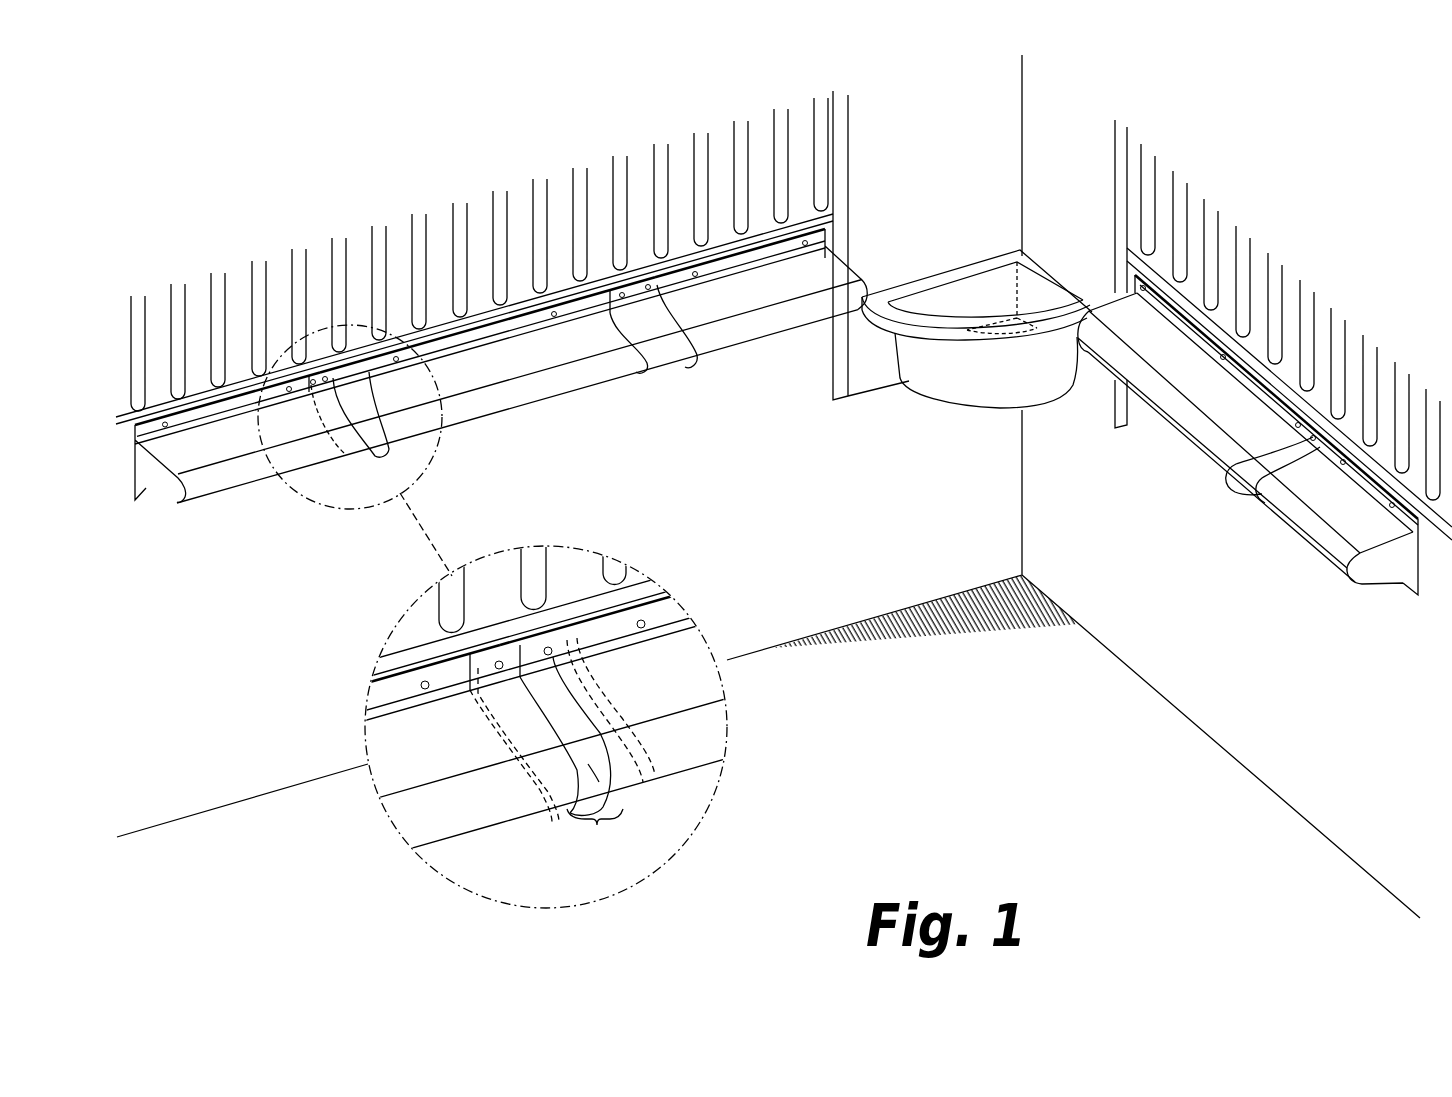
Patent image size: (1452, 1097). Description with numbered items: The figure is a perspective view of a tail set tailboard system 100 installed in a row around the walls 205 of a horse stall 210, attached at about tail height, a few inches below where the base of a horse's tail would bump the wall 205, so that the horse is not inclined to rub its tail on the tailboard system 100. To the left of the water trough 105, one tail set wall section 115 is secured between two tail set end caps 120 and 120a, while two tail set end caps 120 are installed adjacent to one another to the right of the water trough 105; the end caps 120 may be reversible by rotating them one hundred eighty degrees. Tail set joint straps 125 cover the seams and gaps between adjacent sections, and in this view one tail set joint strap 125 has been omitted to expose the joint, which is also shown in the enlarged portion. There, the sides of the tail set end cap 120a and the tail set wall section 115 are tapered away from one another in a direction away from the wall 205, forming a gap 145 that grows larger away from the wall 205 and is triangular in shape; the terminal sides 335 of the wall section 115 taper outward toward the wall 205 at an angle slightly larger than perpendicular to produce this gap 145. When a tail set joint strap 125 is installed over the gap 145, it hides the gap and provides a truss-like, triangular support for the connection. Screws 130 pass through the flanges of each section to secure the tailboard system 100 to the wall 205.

The tail set tailboard system 100 is at (1295, 602).
The water trough 105 is at (1014, 397).
The tail set wall section 115 is at (521, 375).
The tail set end cap 120 is at (770, 302).
The tail set end cap 120a is at (235, 455).
The tail set joint strap 125 is at (669, 376).
The screw 130 is at (805, 246).
The gap 145 is at (597, 831).
The wall 205 is at (847, 519).
The horse stall 210 is at (413, 228).
The terminal side 335 is at (590, 767).